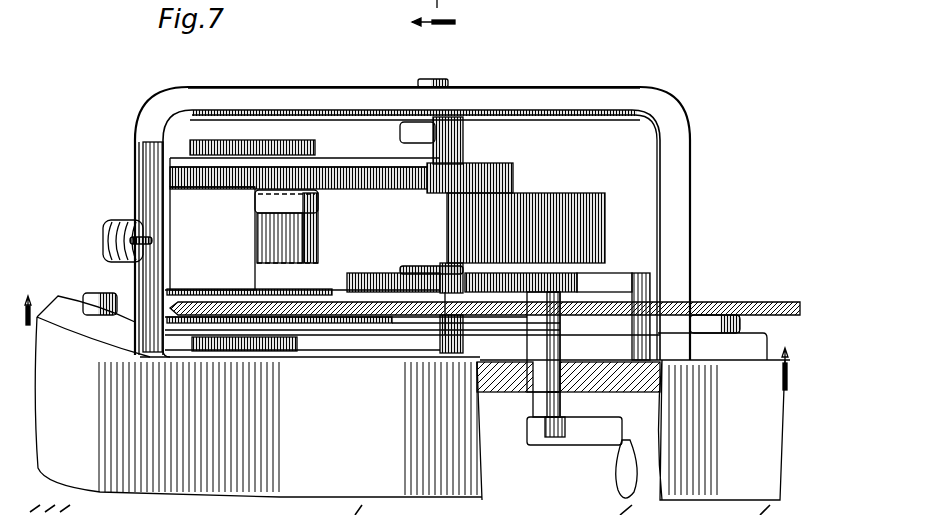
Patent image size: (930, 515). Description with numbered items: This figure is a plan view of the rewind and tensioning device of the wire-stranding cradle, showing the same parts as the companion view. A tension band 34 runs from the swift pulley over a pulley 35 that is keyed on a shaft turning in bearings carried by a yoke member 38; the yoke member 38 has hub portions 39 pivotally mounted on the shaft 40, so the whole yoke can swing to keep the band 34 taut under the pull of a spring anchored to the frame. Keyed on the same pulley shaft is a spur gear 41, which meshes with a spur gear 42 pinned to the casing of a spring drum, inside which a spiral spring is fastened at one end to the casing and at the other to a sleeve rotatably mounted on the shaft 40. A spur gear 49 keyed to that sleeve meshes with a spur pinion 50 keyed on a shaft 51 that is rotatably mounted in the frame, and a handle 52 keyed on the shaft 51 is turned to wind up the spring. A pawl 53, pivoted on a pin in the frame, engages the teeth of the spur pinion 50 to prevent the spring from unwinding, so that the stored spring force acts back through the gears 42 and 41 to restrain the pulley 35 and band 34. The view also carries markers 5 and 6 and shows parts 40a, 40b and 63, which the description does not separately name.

The yoke member 38 is at (313, 148).
The casing cover 40a is at (388, 93).
The shaft 40 is at (447, 85).
The hub portions 39 is at (460, 128).
The spur gear 41 is at (190, 182).
The spur gear 42 is at (514, 177).
The spur gear 49 is at (487, 277).
The bearing cap 63 is at (285, 231).
The pulley 35 is at (217, 290).
The pawl 53 is at (613, 282).
The tension band 34 is at (703, 303).
The knob 40b is at (757, 289).
The spur pinion 50 is at (548, 322).
The shaft 51 is at (552, 341).
The handle 52 is at (604, 442).
The section line 5 is at (433, 25).
The section line 6 is at (411, 329).